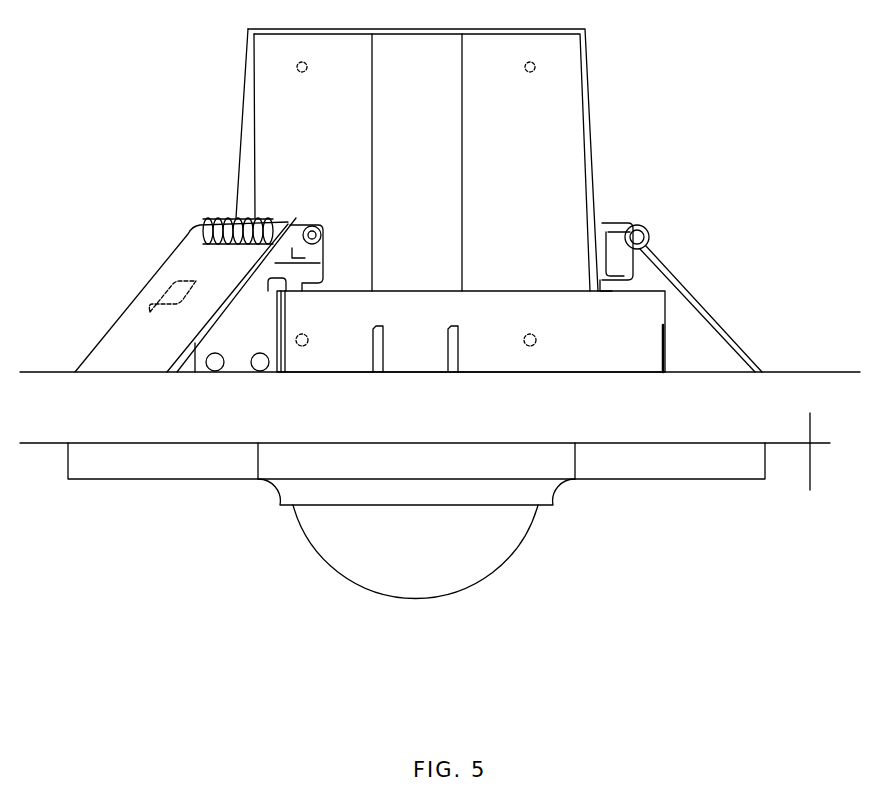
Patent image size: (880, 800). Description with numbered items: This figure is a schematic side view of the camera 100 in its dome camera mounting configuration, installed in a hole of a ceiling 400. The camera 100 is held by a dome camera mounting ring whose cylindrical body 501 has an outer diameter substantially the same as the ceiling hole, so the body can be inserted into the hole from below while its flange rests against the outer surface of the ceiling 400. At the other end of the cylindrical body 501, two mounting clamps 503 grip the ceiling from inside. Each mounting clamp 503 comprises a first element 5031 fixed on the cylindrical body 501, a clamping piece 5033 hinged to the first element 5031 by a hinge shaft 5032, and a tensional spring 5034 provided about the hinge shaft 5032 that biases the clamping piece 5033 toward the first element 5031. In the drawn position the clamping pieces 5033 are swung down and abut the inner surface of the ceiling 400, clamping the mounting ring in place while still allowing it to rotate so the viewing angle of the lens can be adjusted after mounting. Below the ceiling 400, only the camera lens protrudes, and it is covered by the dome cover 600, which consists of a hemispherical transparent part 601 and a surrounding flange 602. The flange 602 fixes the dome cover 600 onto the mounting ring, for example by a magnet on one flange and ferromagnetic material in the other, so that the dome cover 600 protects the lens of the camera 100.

The camera 100 is at (555, 125).
The ceiling 400 is at (825, 468).
The cylindrical body 501 is at (633, 325).
The mounting clamp 503 is at (655, 225).
The first element 5031 is at (305, 268).
The hinge shaft 5032 is at (323, 232).
The clamping piece 5033 is at (120, 340).
The tensional spring 5034 is at (223, 218).
The dome cover 600 is at (297, 568).
The hemispherical transparent part 601 is at (488, 550).
The flange 602 is at (723, 472).